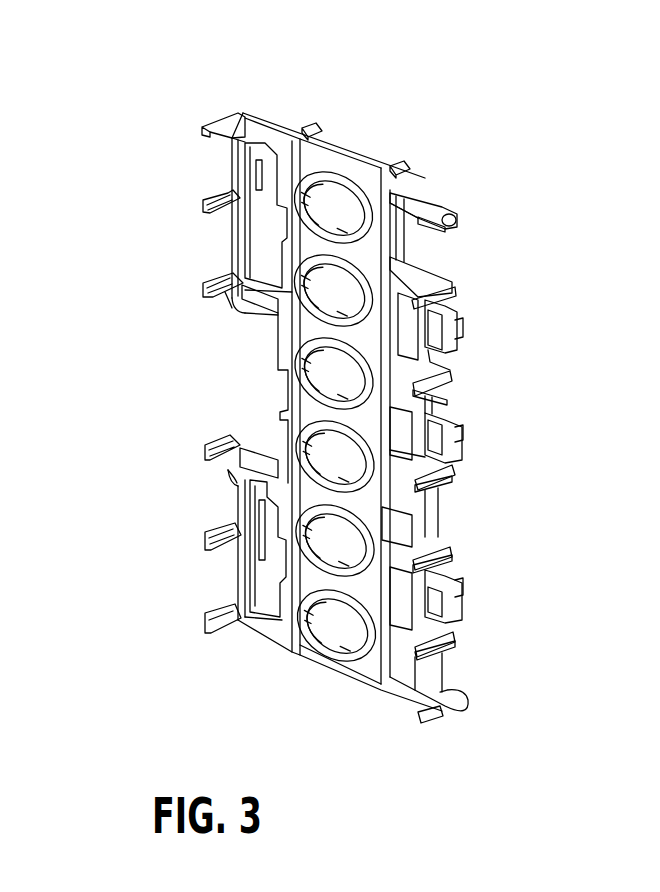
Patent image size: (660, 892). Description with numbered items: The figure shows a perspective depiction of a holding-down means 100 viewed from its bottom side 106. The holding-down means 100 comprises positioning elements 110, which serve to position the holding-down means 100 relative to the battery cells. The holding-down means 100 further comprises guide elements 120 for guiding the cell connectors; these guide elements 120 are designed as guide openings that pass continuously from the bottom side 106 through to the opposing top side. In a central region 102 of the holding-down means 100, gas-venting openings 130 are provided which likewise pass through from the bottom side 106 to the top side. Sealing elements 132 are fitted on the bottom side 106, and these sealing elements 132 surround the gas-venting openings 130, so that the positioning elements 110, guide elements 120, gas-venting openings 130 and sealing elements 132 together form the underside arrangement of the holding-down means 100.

The holding-down means 100 is at (395, 371).
The central region 102 is at (346, 176).
The bottom side 106 is at (415, 195).
The positioning elements 110 is at (205, 130).
The guide elements 120 is at (265, 167).
The gas-venting openings 130 is at (335, 212).
The sealing elements 132 is at (352, 185).